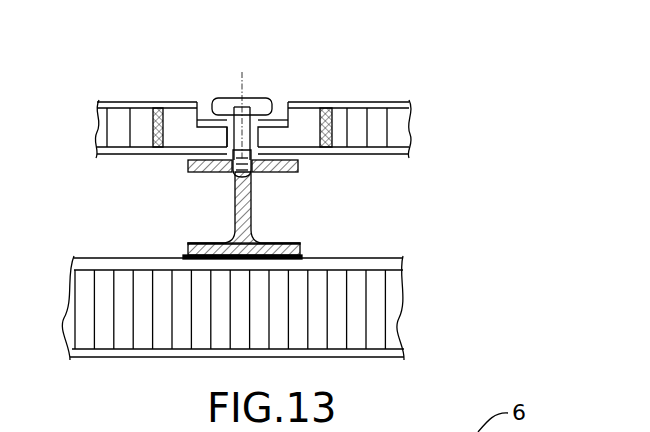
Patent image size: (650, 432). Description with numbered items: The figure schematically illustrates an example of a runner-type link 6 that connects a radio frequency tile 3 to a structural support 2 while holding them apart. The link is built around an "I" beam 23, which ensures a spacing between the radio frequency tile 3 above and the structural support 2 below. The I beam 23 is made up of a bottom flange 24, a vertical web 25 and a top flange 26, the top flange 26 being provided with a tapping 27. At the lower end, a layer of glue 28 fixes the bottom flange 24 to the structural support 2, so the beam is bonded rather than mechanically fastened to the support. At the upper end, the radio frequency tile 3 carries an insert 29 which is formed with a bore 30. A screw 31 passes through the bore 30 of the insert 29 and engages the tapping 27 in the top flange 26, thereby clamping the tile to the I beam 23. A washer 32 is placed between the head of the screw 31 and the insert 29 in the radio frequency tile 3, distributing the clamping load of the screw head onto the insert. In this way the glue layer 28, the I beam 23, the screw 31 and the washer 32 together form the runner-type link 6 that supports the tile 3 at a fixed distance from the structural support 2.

The structural support 2 is at (388, 328).
The radio frequency tile 3 is at (383, 128).
The runner-type link 6 is at (441, 78).
The I beam 23 is at (200, 200).
The bottom flange 24 is at (287, 241).
The web 25 is at (250, 202).
The top flange 26 is at (298, 165).
The tapping 27 is at (266, 150).
The layer of glue 28 is at (182, 258).
The insert 29 is at (303, 138).
The bore 30 is at (217, 100).
The screw 31 is at (270, 98).
The washer 32 is at (210, 127).